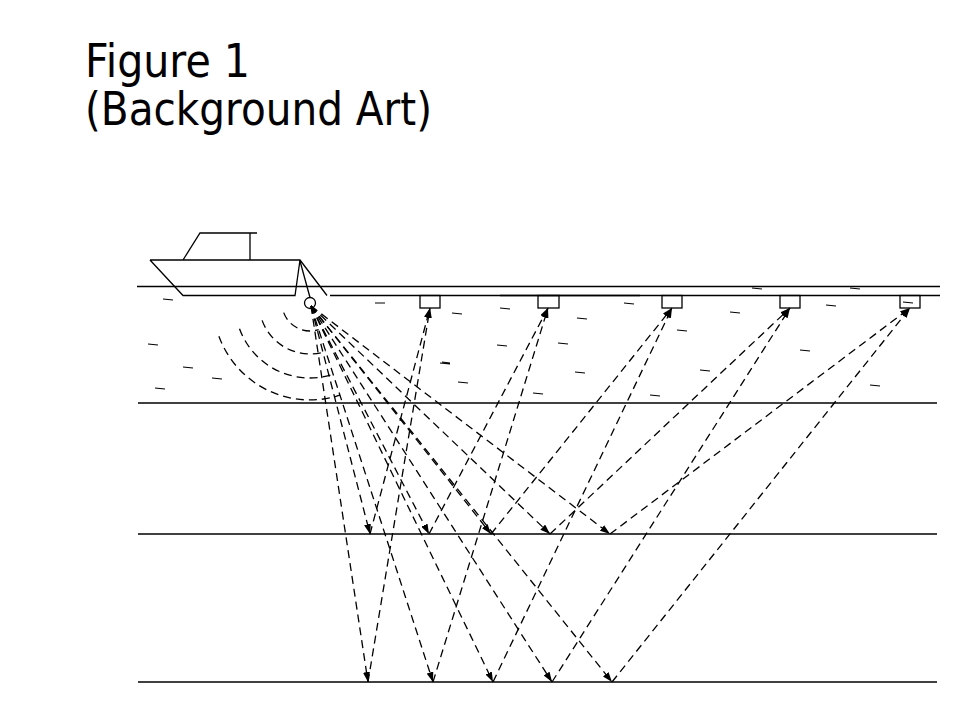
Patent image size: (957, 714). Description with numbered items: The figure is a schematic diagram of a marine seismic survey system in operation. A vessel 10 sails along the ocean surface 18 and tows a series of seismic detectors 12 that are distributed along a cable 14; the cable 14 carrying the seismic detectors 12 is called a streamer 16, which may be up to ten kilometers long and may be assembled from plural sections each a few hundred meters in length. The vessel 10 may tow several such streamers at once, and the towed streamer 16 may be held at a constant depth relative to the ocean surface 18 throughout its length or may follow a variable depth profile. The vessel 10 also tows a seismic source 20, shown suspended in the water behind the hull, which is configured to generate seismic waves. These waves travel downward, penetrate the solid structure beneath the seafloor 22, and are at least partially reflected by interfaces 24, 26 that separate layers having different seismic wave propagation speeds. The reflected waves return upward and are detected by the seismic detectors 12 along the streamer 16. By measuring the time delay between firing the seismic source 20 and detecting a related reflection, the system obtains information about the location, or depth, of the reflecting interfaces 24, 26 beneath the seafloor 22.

The vessel 10 is at (258, 227).
The seismic detectors 12 is at (552, 292).
The cable 14 is at (584, 296).
The streamer 16 is at (600, 258).
The ocean surface 18 is at (808, 283).
The seismic source 20 is at (303, 304).
The seafloor 22 is at (866, 404).
The interface 24 is at (857, 534).
The interface 26 is at (849, 682).